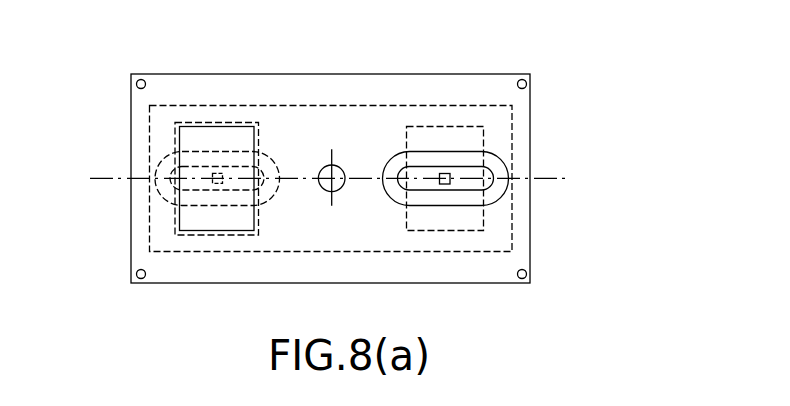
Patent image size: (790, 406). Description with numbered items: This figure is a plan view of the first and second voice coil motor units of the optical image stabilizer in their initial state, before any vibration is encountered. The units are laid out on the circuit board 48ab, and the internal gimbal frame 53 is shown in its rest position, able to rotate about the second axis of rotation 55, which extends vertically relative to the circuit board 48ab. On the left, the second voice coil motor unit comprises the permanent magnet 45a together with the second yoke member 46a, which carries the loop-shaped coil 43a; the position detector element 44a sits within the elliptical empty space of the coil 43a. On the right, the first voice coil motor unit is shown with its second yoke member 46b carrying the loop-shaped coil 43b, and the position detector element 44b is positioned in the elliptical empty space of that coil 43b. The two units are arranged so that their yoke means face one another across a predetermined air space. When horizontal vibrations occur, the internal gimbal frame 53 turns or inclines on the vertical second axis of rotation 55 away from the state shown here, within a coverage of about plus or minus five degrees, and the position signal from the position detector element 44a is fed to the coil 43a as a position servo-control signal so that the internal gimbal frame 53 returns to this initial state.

The loop-shaped coil 43a is at (163, 158).
The loop-shaped coil 43b is at (498, 160).
The position detector element 44a is at (212, 174).
The position detector element 44b is at (450, 184).
The permanent magnet 45a is at (212, 235).
The second yoke member 46a is at (233, 124).
The second yoke member 46b is at (483, 231).
The circuit board 48ab is at (427, 74).
The internal gimbal frame 53 is at (513, 116).
The second axis of rotation 55 is at (332, 178).